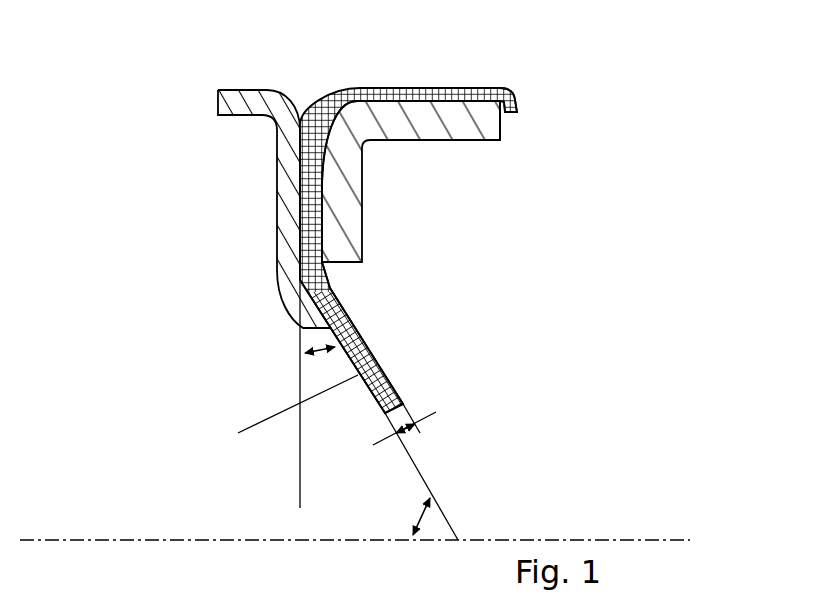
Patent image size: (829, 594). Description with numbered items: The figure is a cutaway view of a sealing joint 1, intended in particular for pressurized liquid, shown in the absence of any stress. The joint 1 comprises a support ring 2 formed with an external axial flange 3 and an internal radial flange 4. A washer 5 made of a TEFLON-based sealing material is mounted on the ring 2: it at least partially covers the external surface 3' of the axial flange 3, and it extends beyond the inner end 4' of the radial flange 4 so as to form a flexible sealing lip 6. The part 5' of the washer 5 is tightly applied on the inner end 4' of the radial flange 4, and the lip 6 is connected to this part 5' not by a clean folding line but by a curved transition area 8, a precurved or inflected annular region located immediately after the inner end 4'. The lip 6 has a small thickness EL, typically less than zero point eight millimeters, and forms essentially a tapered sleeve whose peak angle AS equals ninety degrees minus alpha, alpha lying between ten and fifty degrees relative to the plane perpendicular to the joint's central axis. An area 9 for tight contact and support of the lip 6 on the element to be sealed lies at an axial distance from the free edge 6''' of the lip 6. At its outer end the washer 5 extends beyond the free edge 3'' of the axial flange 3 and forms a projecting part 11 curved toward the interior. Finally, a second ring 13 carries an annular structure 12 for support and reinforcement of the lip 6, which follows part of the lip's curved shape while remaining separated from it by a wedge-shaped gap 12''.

The sealing joint 1 is at (225, 297).
The support ring 2 is at (447, 185).
The external axial flange 3 is at (428, 156).
The external surface of the axial flange 3' is at (428, 73).
The free edge of the axial flange 3'' is at (540, 130).
The internal radial flange 4 is at (369, 181).
The inner end of the radial flange 4' is at (379, 288).
The washer 5 is at (408, 233).
The part of the washer 5' is at (242, 224).
The sealing lip 6 is at (395, 346).
The free edge of the lip 6''' is at (365, 426).
The curved transition area 8 is at (331, 275).
The area for tight contact and support 9 is at (288, 415).
The projecting part 11 is at (513, 103).
The annular structure for support and reinforcement 12 is at (269, 314).
The wedge-shaped gap 12'' is at (224, 391).
The second ring 13 is at (283, 172).
The thickness of the sealing lip EL is at (410, 417).
The peak angle AS is at (418, 476).